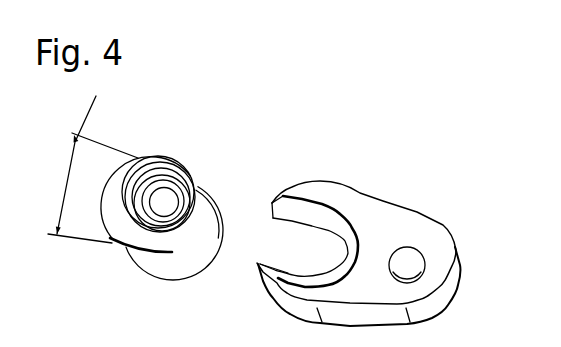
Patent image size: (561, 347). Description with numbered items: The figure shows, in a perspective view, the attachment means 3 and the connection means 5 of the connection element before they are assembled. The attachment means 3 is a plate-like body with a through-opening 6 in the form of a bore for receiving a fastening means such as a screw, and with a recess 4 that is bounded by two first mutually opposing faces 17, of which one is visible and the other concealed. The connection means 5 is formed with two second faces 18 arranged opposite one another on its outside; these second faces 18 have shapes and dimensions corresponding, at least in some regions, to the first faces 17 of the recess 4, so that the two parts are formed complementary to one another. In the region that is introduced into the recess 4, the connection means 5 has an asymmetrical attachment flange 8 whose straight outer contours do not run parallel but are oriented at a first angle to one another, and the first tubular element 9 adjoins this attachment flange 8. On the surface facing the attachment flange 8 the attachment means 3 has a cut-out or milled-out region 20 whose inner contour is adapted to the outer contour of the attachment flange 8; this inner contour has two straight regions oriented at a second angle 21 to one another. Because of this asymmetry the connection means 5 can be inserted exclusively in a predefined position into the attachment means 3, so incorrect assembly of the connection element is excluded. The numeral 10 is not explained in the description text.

The attachment means 3 is at (405, 219).
The recess 4 is at (327, 247).
The connection means 5 is at (188, 143).
The through-opening 6 is at (415, 269).
The attachment flange 8 is at (122, 232).
The first tubular element 9 is at (152, 236).
The disc 10 is at (167, 267).
The first faces 17 is at (292, 265).
The second faces 18 is at (93, 162).
The cut-out region 20 is at (290, 203).
The second angle 21 is at (308, 208).